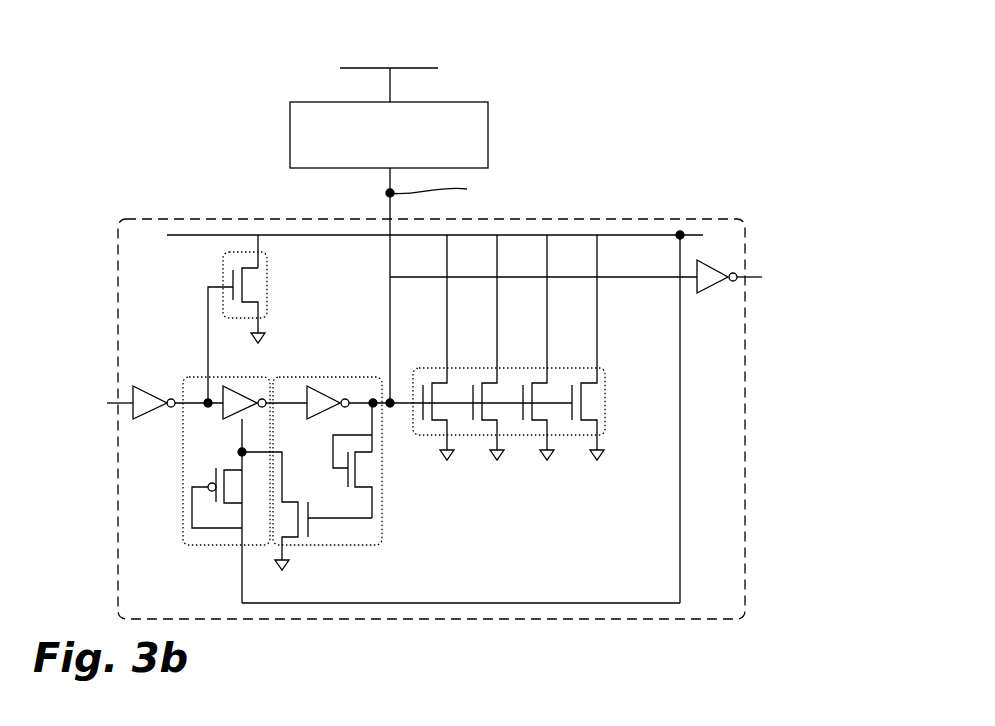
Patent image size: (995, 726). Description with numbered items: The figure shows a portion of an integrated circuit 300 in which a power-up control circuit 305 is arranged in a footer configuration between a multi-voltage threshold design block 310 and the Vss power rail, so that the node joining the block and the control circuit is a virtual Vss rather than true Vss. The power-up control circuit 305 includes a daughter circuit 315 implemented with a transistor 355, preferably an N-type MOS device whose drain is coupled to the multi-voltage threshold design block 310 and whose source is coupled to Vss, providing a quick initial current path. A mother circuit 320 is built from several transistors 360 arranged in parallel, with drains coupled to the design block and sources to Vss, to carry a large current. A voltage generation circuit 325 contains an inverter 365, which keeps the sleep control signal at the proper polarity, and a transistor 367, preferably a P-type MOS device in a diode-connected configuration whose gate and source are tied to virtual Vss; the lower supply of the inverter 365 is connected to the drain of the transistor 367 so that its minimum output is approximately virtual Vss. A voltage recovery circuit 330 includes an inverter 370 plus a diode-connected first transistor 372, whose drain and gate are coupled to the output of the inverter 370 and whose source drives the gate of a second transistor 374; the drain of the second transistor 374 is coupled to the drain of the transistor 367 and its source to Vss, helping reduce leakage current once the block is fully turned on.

The integrated circuit 300 is at (151, 66).
The power-up control circuit 305 is at (722, 217).
The multi-voltage threshold design block 310 is at (470, 101).
The daughter circuit 315 is at (267, 264).
The mother circuit 320 is at (603, 381).
The voltage generation circuit 325 is at (183, 462).
The voltage recovery circuit 330 is at (382, 521).
The transistor 355 is at (250, 287).
The transistors 360 is at (590, 402).
The inverter 365 is at (235, 385).
The transistor 367 is at (208, 497).
The inverter 370 is at (331, 395).
The first transistor 372 is at (365, 470).
The second transistor 374 is at (315, 528).